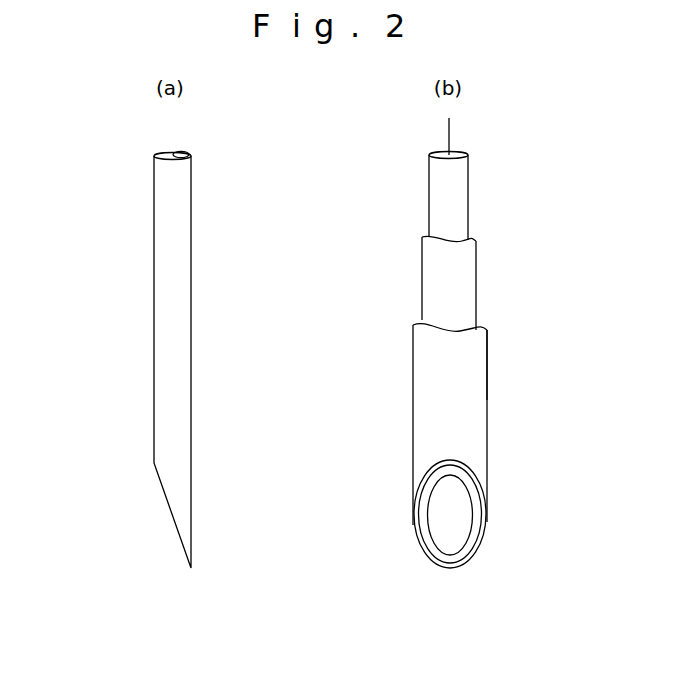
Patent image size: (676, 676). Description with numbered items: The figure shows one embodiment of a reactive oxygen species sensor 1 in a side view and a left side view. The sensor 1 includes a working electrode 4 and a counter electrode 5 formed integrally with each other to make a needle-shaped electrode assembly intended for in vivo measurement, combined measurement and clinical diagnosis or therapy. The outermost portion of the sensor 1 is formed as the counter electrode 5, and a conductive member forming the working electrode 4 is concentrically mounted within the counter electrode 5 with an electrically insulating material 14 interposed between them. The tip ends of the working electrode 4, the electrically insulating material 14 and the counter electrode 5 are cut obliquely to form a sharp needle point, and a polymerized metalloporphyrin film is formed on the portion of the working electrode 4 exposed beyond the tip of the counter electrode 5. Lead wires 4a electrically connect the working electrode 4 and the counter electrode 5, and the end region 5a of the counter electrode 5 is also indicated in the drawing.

The reactive oxygen species sensor 1 is at (117, 192).
The working electrode 4 is at (458, 195).
The lead wire 4a is at (449, 132).
The counter electrode 5 is at (167, 327).
The jacket end portion 5a is at (477, 393).
The electrically insulating material 14 is at (465, 282).